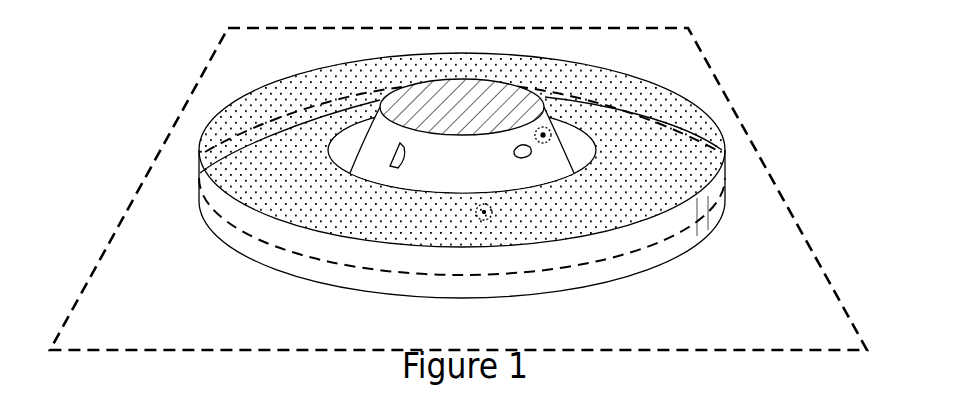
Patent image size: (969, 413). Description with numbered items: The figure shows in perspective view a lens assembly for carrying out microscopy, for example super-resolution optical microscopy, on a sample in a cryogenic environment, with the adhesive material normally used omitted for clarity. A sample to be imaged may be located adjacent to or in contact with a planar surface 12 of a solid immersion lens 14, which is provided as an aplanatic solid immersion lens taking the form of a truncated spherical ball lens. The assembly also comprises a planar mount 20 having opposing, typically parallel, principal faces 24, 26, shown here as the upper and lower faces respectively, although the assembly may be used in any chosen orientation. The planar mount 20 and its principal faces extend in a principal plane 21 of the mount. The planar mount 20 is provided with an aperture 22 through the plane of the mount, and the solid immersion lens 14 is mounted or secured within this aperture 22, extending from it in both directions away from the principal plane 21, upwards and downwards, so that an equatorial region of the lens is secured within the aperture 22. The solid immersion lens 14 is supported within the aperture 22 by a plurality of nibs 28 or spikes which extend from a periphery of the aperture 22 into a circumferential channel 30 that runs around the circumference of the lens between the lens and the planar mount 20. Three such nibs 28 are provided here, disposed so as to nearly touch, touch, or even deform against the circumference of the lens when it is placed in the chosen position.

The planar surface 12 is at (473, 96).
The solid immersion lens 14 is at (492, 148).
The planar mount 20 is at (578, 147).
The principal plane 21 is at (737, 285).
The aperture 22 is at (356, 128).
The upper principal face 24 is at (268, 118).
The lower principal face 26 is at (273, 277).
The nibs 28 is at (333, 152).
The circumferential channel 30 is at (551, 134).